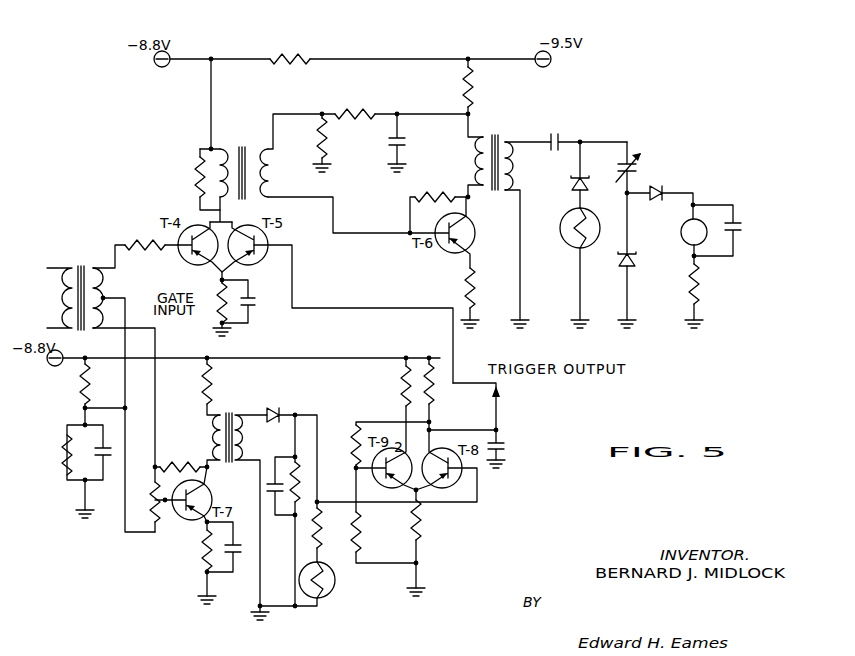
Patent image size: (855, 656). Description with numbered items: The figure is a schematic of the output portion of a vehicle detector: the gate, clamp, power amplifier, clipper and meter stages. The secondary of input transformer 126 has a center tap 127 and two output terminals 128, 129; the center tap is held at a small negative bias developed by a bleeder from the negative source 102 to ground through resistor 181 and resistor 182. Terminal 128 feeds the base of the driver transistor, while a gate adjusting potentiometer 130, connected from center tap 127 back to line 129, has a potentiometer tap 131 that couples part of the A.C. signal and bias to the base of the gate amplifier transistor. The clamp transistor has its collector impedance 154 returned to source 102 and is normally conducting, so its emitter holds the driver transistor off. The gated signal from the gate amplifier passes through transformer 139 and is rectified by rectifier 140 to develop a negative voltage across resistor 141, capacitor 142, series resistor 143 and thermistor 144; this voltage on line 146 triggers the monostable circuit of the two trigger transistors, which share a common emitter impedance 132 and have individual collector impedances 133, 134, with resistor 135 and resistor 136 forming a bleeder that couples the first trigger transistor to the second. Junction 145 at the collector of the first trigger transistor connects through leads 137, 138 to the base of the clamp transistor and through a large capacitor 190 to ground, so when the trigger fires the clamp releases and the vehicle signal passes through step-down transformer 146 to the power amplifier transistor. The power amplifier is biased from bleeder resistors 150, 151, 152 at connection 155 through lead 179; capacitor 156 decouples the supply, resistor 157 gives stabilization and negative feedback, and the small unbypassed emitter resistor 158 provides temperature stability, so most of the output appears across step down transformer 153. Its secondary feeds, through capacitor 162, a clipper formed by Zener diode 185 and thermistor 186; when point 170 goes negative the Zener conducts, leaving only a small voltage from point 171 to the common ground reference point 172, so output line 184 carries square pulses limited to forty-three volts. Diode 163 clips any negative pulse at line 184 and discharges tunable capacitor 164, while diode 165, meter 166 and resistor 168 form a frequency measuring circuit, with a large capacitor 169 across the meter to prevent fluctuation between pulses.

The source 102 is at (170, 58).
The transformer 126 is at (64, 266).
The center tap 127 is at (104, 297).
The output terminal 128 is at (115, 245).
The output terminal 129 is at (96, 329).
The gate adjusting potentiometer 130 is at (155, 495).
The potentiometer tap 131 is at (170, 505).
The common emitter impedance 132 is at (418, 528).
The collector impedance 133 is at (429, 400).
The collector impedance 134 is at (400, 401).
The resistor 135 is at (354, 448).
The resistor 136 is at (358, 528).
The lead 137 is at (478, 425).
The lead 138 is at (456, 342).
The transformer 139 is at (213, 392).
The rectifier 140 is at (285, 400).
The resistor 141 is at (307, 484).
The capacitor 142 is at (268, 492).
The resistor 143 is at (317, 527).
The thermistor 144 is at (334, 586).
The junction 145 is at (430, 423).
The step-down transformer 146 is at (249, 141).
The resistor 150 is at (325, 152).
The resistor 151 is at (339, 112).
The resistor 152 is at (471, 94).
The step down transformer 153 is at (508, 126).
The collector impedance 154 is at (196, 184).
The connection 155 is at (320, 112).
The capacitor 156 is at (401, 148).
The resistor 157 is at (447, 195).
The resistor 158 is at (473, 295).
The capacitor 162 is at (545, 134).
The diode 163 is at (634, 271).
The tunable capacitor 164 is at (636, 170).
The diode 165 is at (664, 190).
The meter 166 is at (678, 237).
The resistor 168 is at (701, 278).
The capacitor 169 is at (734, 220).
The point 170 is at (517, 138).
The point 171 is at (582, 140).
The common ground reference point 172 is at (700, 323).
The lead 179 is at (302, 118).
The resistor 181 is at (78, 391).
The resistor 182 is at (64, 454).
The line 184 is at (602, 139).
The Zener diode 185 is at (570, 186).
The thermistor 186 is at (568, 238).
The capacitor 190 is at (503, 446).